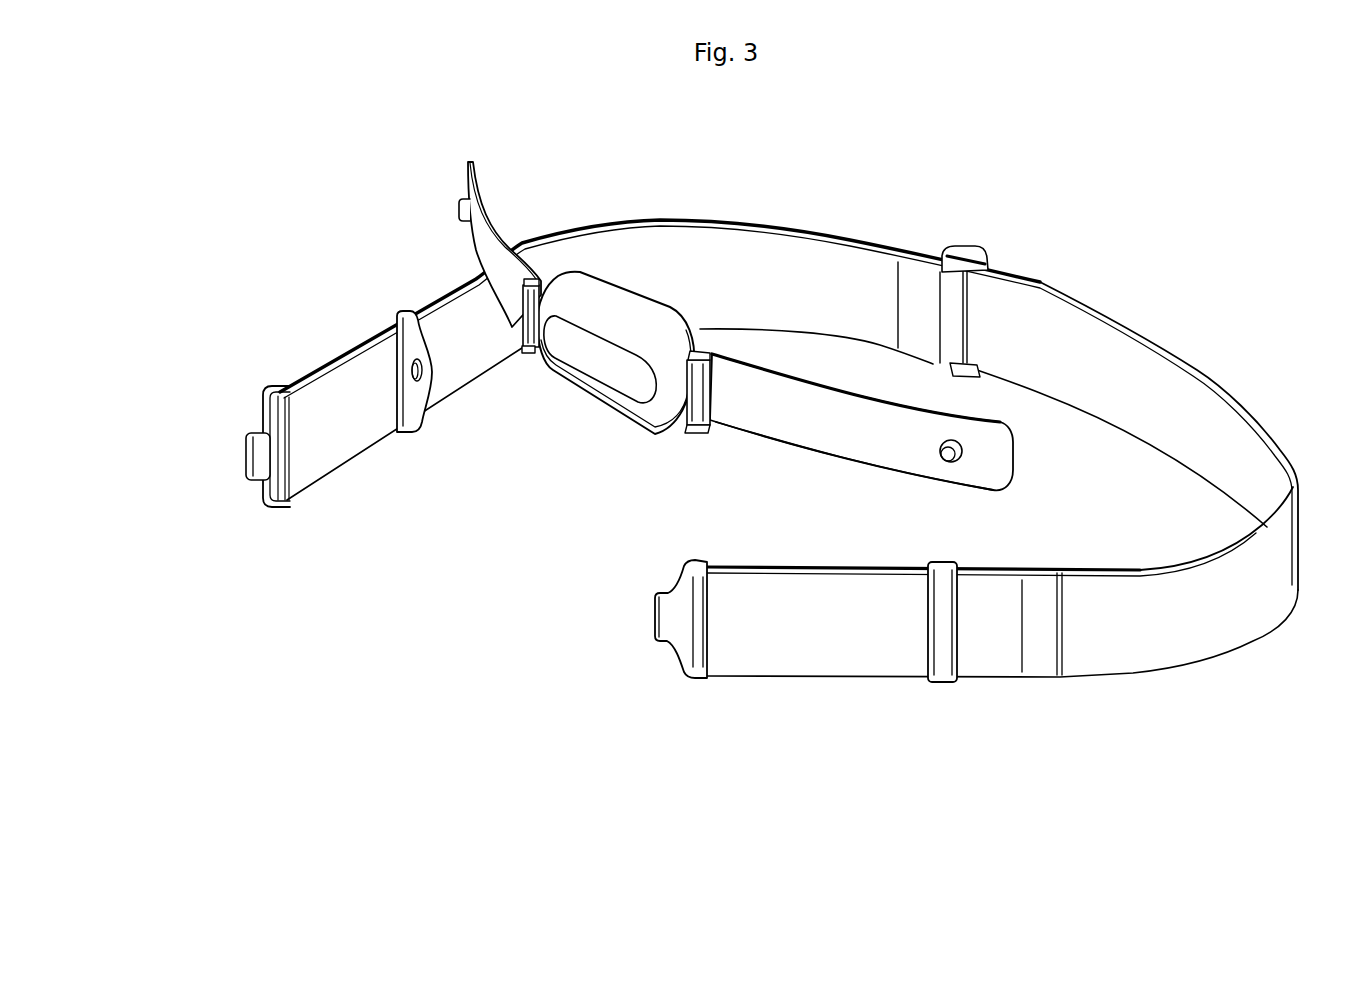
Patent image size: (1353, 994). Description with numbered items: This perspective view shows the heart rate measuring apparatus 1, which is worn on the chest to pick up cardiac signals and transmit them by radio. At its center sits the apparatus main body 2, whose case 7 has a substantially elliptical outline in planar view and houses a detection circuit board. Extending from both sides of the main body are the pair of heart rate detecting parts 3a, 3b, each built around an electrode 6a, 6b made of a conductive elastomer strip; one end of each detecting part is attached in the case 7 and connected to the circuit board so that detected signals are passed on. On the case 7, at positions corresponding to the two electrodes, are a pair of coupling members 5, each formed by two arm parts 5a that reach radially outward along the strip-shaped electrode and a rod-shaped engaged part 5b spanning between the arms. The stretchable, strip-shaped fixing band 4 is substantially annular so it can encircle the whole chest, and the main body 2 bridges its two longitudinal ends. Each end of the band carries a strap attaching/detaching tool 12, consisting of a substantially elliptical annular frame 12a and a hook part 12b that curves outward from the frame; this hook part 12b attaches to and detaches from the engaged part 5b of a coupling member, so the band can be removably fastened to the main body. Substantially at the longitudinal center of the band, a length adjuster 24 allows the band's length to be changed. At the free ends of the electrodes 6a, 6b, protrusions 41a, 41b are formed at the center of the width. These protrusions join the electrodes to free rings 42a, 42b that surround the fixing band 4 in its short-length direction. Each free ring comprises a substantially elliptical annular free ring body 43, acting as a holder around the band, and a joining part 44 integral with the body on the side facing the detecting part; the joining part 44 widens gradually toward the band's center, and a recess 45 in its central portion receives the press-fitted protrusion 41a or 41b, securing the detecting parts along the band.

The heart rate measuring apparatus 1 is at (1126, 196).
The apparatus main body 2 is at (624, 361).
The heart rate detecting part 3a is at (861, 452).
The heart rate detecting part 3b is at (446, 228).
The fixing band 4 is at (833, 230).
The coupling member 5 is at (617, 353).
The arm part 5a is at (538, 282).
The engaged part 5b is at (527, 316).
The electrode 6a is at (853, 457).
The electrode 6b is at (497, 262).
The case 7 is at (650, 293).
The strap attaching/detaching tool 12 is at (431, 536).
The frame 12a is at (276, 389).
The hook part 12b is at (250, 458).
The length adjuster 24 is at (960, 246).
The protrusion 41a is at (949, 461).
The protrusion 41b is at (458, 208).
The free ring 42a is at (925, 676).
The free ring 42b is at (391, 407).
The free ring body 43 is at (935, 650).
The joining part 44 is at (398, 388).
The recess 45 is at (412, 368).